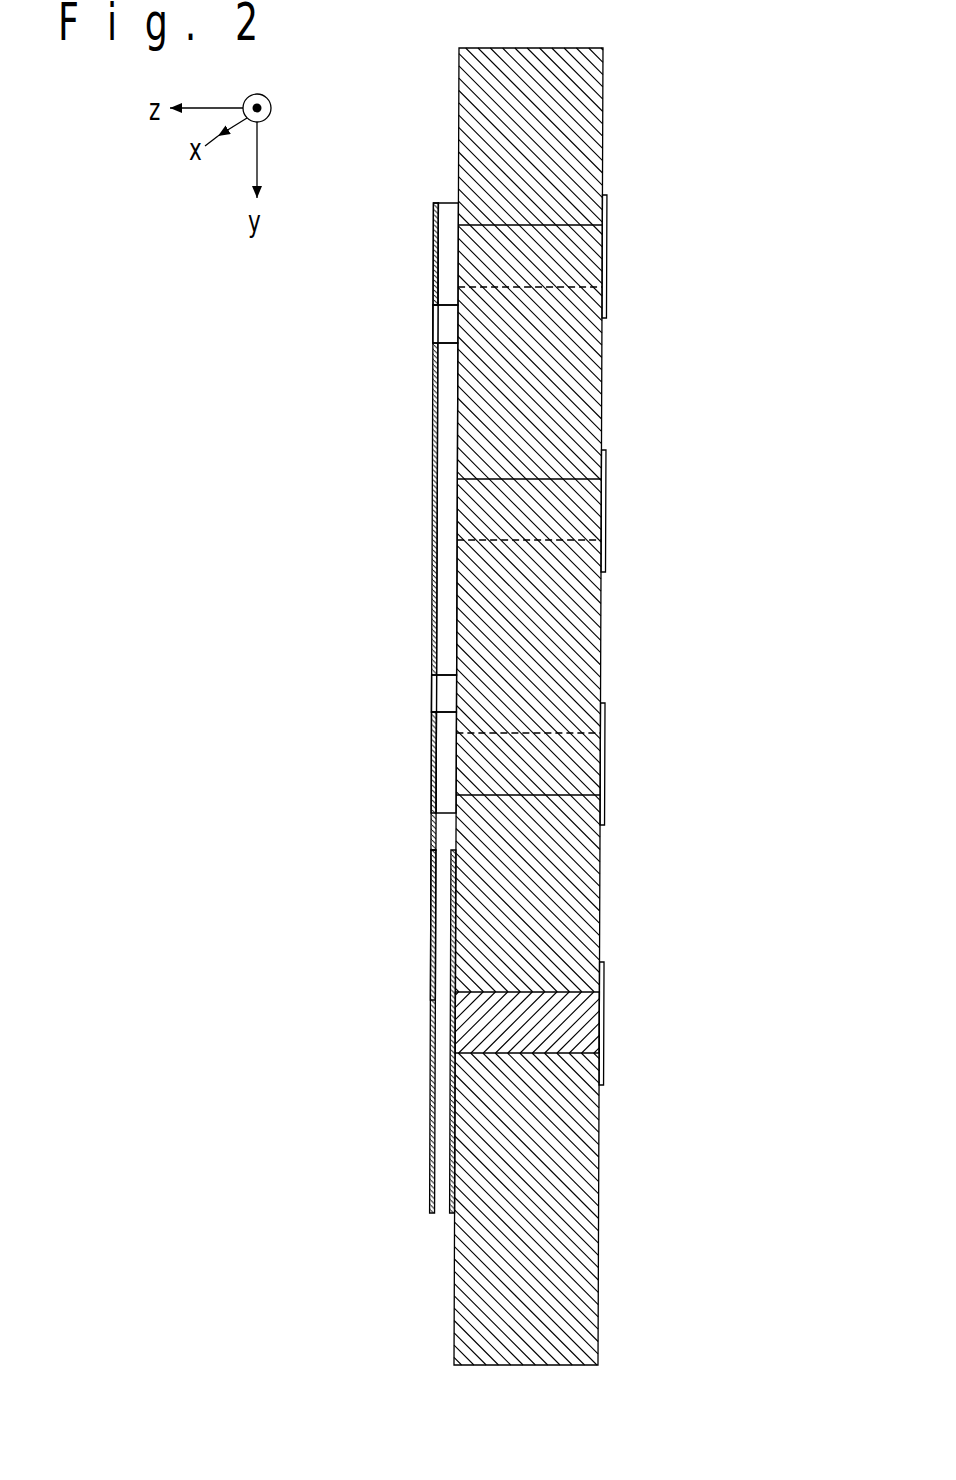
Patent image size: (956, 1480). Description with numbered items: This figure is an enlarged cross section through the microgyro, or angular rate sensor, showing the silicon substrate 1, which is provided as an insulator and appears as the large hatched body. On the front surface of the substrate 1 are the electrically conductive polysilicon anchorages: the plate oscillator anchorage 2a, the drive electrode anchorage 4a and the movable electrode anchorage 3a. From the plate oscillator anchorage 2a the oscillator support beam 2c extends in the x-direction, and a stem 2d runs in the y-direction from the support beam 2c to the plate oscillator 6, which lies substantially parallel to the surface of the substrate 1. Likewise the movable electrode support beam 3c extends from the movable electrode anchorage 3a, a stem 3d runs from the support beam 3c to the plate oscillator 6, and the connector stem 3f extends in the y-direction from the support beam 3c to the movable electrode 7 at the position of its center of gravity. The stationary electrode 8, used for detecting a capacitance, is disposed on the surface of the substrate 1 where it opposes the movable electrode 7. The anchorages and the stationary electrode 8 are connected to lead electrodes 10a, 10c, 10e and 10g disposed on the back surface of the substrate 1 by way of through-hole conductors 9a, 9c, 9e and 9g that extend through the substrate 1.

The silicon substrate 1 is at (586, 117).
The plate oscillator anchorage 2a is at (449, 212).
The oscillator support beam 2c is at (436, 257).
The stem 2d is at (438, 323).
The movable electrode anchorage 3a is at (450, 757).
The movable electrode support beam 3c is at (435, 790).
The stem 3d is at (435, 693).
The connector stem 3f is at (436, 985).
The drive electrode anchorage 4a is at (450, 440).
The plate oscillator 6 is at (434, 507).
The movable electrode 7 is at (434, 1113).
The stationary electrode 8 is at (454, 1186).
The through-hole conductor 9a is at (526, 225).
The through-hole conductor 9c is at (525, 479).
The through-hole conductor 9e is at (528, 733).
The through-hole conductor 9g is at (529, 992).
The lead electrode 10a is at (604, 265).
The lead electrode 10c is at (603, 525).
The lead electrode 10e is at (604, 778).
The lead electrode 10g is at (604, 1030).